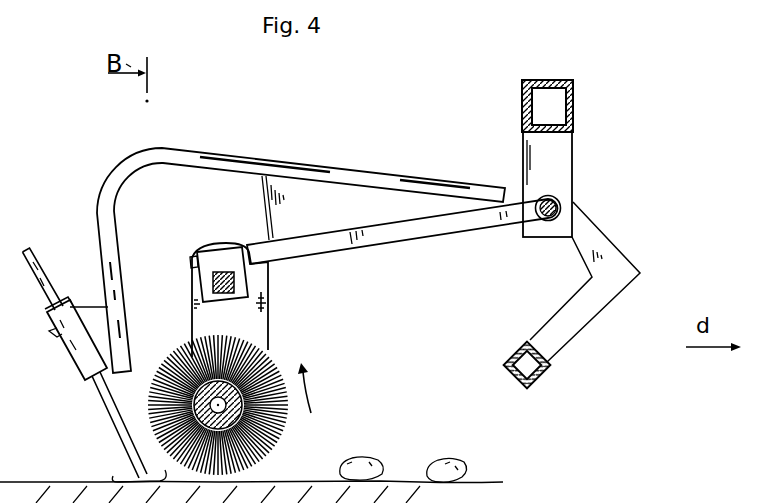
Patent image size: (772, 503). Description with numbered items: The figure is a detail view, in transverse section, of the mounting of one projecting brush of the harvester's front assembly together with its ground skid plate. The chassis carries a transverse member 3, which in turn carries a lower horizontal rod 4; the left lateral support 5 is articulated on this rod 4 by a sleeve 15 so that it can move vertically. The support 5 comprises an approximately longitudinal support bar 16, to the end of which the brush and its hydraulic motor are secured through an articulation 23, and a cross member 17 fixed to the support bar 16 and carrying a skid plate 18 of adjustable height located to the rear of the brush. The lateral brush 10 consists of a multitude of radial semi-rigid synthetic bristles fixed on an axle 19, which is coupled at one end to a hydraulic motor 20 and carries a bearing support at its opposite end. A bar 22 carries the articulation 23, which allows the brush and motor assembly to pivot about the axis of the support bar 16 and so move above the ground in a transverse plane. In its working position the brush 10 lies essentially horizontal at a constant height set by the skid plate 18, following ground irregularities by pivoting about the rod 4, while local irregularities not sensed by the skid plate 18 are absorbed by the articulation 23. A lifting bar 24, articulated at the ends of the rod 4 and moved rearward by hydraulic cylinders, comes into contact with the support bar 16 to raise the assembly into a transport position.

The transverse member 3 is at (522, 92).
The lower horizontal rod 4 is at (552, 223).
The left lateral support 5 is at (414, 159).
The lateral brush 10 is at (277, 364).
The sleeve 15 is at (540, 190).
The support bar 16 is at (397, 243).
The cross member 17 is at (215, 153).
The skid plate 18 is at (102, 413).
The axle 19 is at (270, 444).
The hydraulic motor 20 is at (237, 318).
The bar 22 is at (227, 273).
The articulation 23 is at (202, 256).
The lifting bar 24 is at (536, 380).